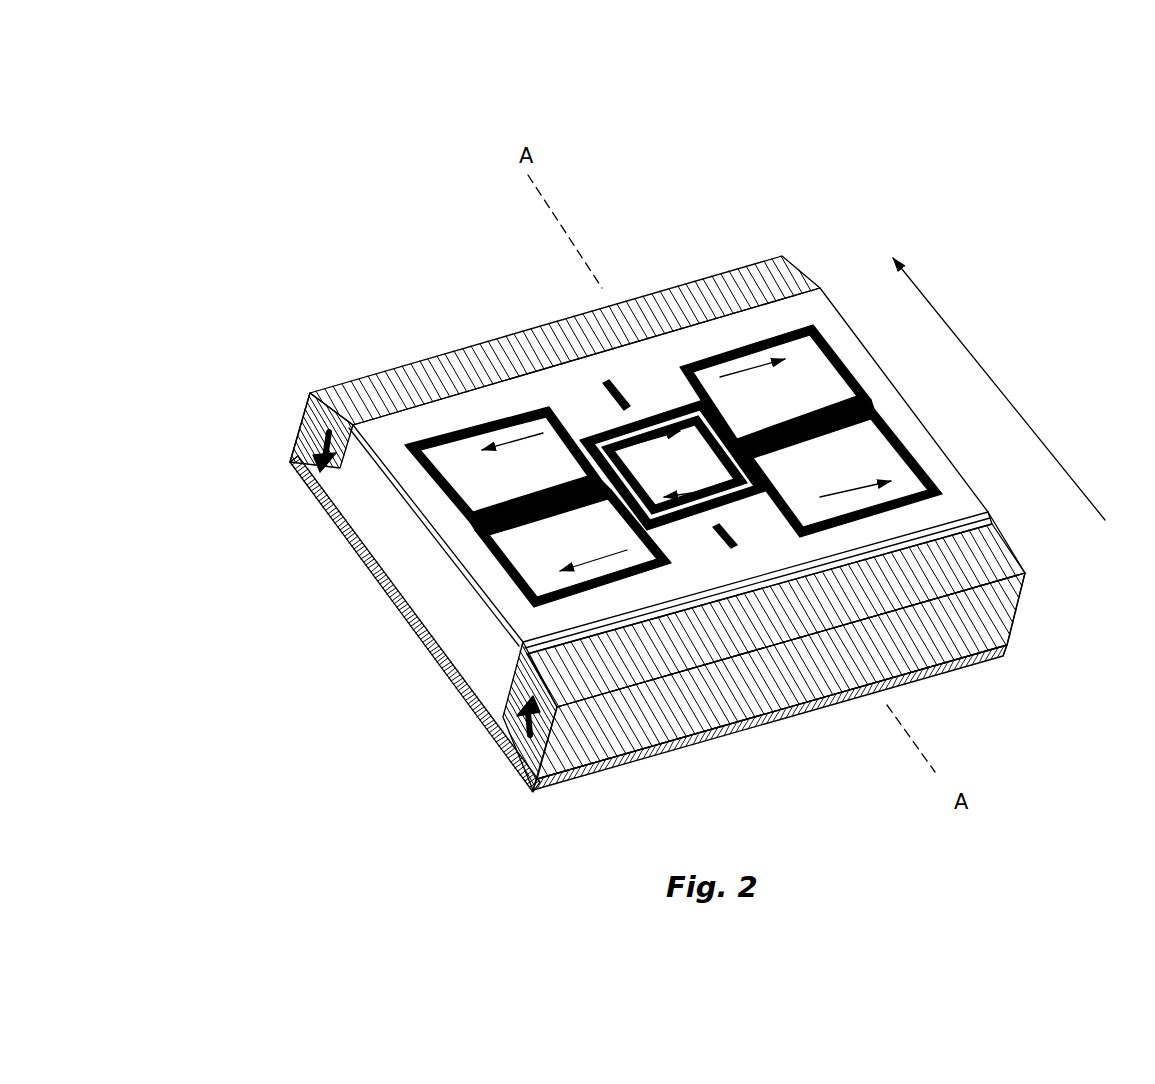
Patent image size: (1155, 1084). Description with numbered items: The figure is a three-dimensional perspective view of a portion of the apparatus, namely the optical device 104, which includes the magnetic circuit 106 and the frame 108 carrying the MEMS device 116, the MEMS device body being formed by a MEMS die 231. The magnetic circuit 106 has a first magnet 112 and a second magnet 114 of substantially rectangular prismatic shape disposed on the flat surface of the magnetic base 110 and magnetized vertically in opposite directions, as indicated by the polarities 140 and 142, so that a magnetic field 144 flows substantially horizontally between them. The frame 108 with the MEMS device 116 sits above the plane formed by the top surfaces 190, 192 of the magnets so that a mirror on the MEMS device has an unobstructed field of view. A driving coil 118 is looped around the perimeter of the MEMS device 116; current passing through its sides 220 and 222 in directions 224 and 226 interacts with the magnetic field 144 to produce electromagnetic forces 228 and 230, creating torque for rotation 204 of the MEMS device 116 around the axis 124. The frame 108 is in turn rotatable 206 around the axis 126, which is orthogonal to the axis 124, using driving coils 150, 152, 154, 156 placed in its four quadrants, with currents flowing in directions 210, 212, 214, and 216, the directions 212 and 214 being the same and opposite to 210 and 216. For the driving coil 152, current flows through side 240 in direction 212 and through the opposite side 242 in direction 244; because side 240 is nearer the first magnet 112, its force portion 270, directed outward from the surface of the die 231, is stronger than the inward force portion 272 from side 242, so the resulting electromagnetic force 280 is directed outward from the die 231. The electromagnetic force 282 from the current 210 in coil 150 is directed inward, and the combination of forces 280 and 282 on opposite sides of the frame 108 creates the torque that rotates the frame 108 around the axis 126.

The optical device 104 is at (818, 126).
The magnetic circuit 106 is at (1013, 658).
The frame 108 is at (445, 489).
The base 110 is at (458, 688).
The first magnet 112 is at (304, 418).
The second magnet 114 is at (720, 710).
The MEMS device 116 is at (540, 513).
The driving coil 118 is at (598, 392).
The axis 124 is at (530, 522).
The axis 126 is at (950, 660).
The polarity of magnet 140 is at (296, 448).
The polarity of magnet 142 is at (522, 748).
The magnetic field 144 is at (999, 389).
The driving coil 150 is at (360, 378).
The driving coil 152 is at (780, 350).
The driving coil 154 is at (1026, 575).
The driving coil 156 is at (513, 583).
The top surface of magnet 190 is at (470, 357).
The top surface of magnet 192 is at (1003, 543).
The rotation of MEMS device 204 is at (505, 497).
The rotation of frame 206 is at (578, 358).
The current direction 210 is at (437, 427).
The current direction 212 is at (755, 380).
The current direction 214 is at (1016, 597).
The current direction 216 is at (692, 735).
The side of driving coil 220 is at (604, 432).
The side of driving coil 222 is at (662, 508).
The current direction 224 is at (664, 436).
The current direction 226 is at (728, 490).
The electromagnetic force 228 is at (700, 330).
The electromagnetic force 230 is at (730, 512).
The MEMS die 231 is at (467, 640).
The side of driving coil 240 is at (790, 340).
The side of driving coil 242 is at (735, 423).
The current direction 244 is at (763, 417).
The electromagnetic force portion 270 is at (807, 330).
The electromagnetic force portion 272 is at (875, 395).
The resulting electromagnetic force 280 is at (822, 310).
The electromagnetic force 282 is at (496, 405).